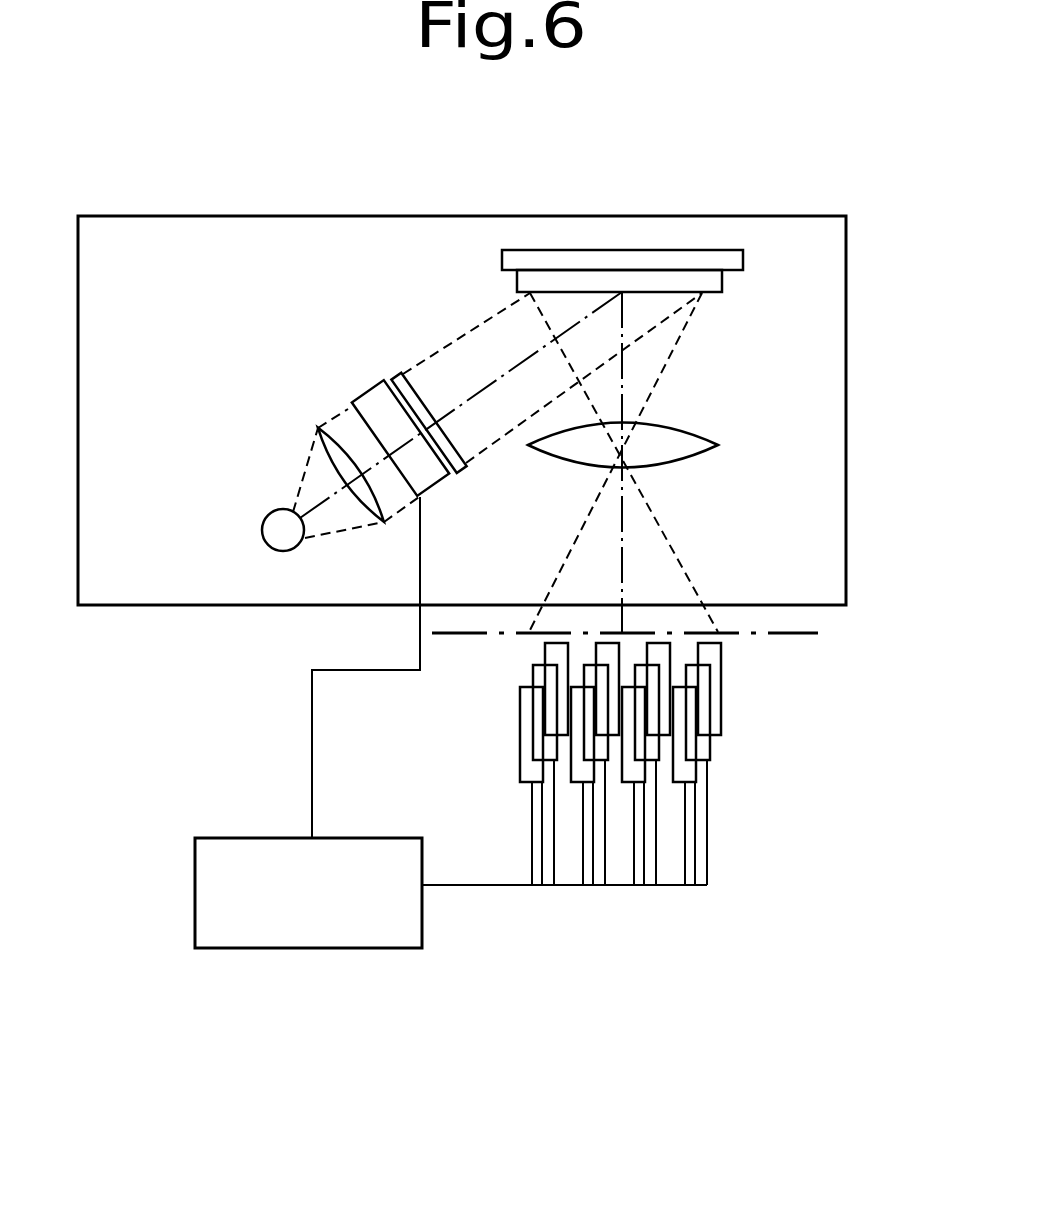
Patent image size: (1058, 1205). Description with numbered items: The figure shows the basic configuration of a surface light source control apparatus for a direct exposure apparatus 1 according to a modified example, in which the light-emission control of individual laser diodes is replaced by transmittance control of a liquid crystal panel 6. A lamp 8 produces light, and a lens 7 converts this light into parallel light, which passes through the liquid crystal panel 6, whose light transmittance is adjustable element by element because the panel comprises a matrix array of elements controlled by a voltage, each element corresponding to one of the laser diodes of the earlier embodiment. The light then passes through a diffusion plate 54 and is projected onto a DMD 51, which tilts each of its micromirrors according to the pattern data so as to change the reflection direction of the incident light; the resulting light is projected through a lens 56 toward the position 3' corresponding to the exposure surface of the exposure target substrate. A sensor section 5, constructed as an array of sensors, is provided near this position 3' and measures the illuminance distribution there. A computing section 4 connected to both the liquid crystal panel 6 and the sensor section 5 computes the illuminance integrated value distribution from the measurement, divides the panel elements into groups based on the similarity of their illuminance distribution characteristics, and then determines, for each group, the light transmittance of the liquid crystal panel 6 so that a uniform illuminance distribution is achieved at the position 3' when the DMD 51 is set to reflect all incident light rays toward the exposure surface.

The direct exposure apparatus 1 is at (392, 216).
The DMD 51 is at (722, 282).
The diffusion plate 54 is at (394, 376).
The liquid crystal panel 6 is at (369, 387).
The lens 7 is at (334, 437).
The lamp 8 is at (278, 511).
The lens 56 is at (702, 433).
The position corresponding to the exposure surface of the exposure target substrate 3' is at (680, 668).
The sensor section 5 is at (728, 762).
The computing section 4 is at (298, 950).